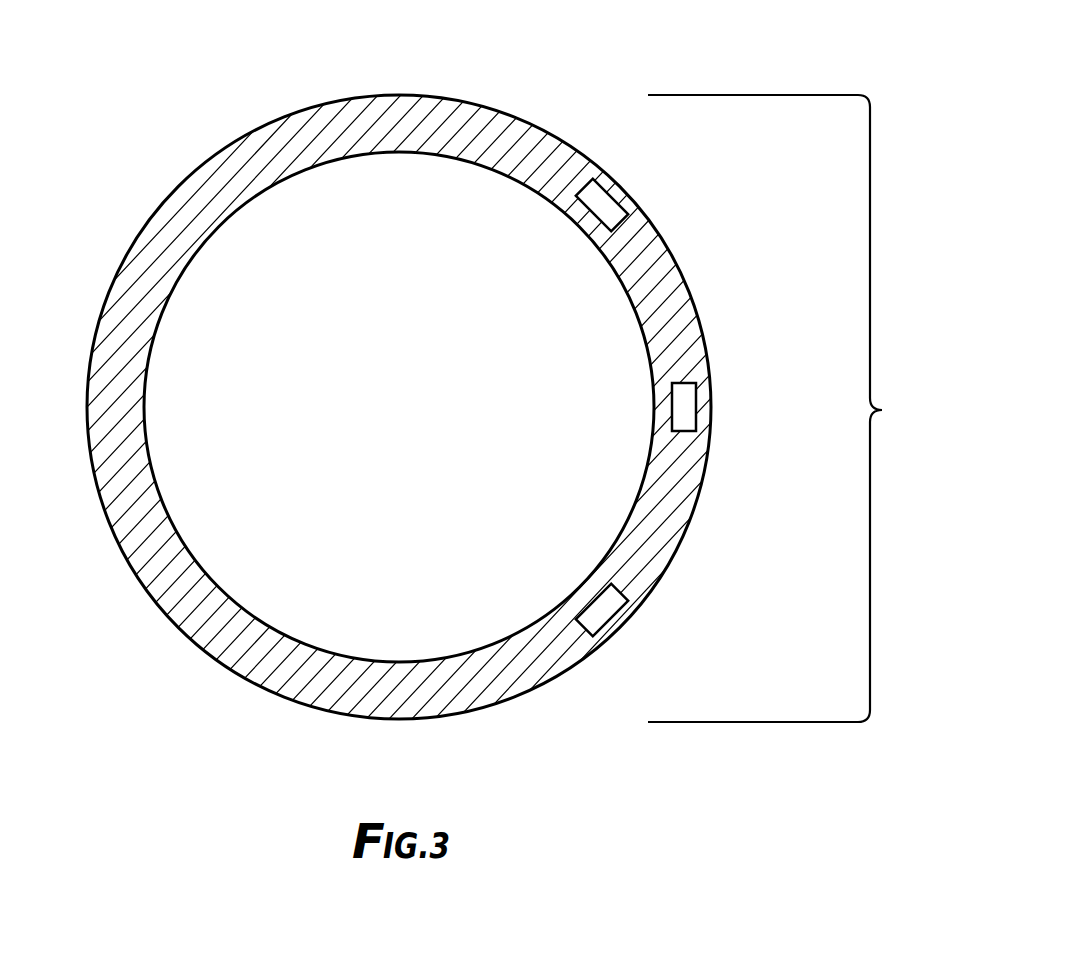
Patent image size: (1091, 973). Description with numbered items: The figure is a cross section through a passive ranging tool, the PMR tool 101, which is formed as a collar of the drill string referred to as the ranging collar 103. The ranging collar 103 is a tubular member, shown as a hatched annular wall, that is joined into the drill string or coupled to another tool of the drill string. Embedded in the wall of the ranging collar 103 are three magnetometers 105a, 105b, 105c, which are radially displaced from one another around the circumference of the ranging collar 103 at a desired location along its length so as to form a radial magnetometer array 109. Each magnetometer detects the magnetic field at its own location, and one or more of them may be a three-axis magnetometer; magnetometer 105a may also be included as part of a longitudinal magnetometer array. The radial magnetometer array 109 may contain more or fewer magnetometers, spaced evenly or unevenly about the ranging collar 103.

The PMR tool 101 is at (216, 76).
The ranging collar 103 is at (141, 229).
The magnetometer 105a is at (697, 393).
The magnetometer 105b is at (618, 182).
The magnetometer 105c is at (622, 606).
The radial magnetometer array 109 is at (882, 410).